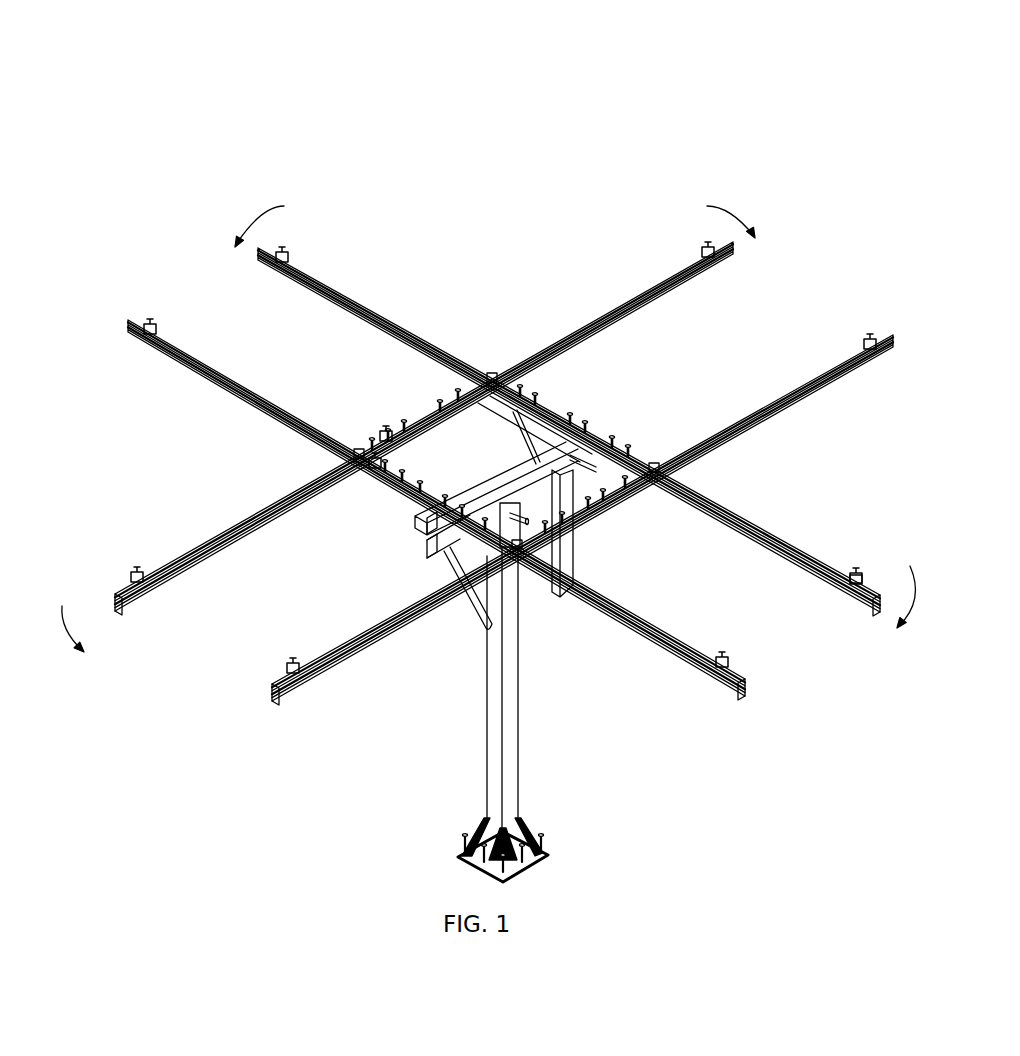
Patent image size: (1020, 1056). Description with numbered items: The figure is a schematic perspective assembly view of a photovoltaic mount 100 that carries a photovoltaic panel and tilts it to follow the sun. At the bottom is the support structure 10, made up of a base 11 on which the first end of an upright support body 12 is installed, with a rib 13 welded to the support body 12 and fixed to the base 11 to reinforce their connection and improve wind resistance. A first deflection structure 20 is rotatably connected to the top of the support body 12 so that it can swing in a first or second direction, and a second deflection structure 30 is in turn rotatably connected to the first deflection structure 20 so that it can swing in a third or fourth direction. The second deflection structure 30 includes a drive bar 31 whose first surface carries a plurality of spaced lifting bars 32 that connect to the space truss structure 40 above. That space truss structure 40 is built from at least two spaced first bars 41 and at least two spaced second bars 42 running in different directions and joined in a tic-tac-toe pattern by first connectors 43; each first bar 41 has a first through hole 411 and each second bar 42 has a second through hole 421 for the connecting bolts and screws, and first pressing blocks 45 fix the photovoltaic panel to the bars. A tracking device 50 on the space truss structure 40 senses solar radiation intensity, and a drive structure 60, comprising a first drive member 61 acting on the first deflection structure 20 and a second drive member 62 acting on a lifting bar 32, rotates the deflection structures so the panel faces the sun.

The photovoltaic mount 100 is at (401, 52).
The support structure 10 is at (650, 793).
The base 11 is at (530, 870).
The support body 12 is at (515, 792).
The rib 13 is at (530, 822).
The first deflection structure 20 is at (430, 548).
The second deflection structure 30 is at (582, 161).
The drive bar 31 is at (483, 480).
The lifting bar 32 is at (393, 463).
The space truss structure 40 is at (57, 408).
The first bar 41 is at (167, 346).
The second bar 42 is at (215, 538).
The first connector 43 is at (352, 449).
The first through hole 411 is at (146, 328).
The second through hole 421 is at (132, 585).
The first pressing block 45 is at (277, 693).
The tracking device 50 is at (861, 590).
The drive structure 60 is at (802, 223).
The first drive member 61 is at (477, 605).
The second drive member 62 is at (560, 497).